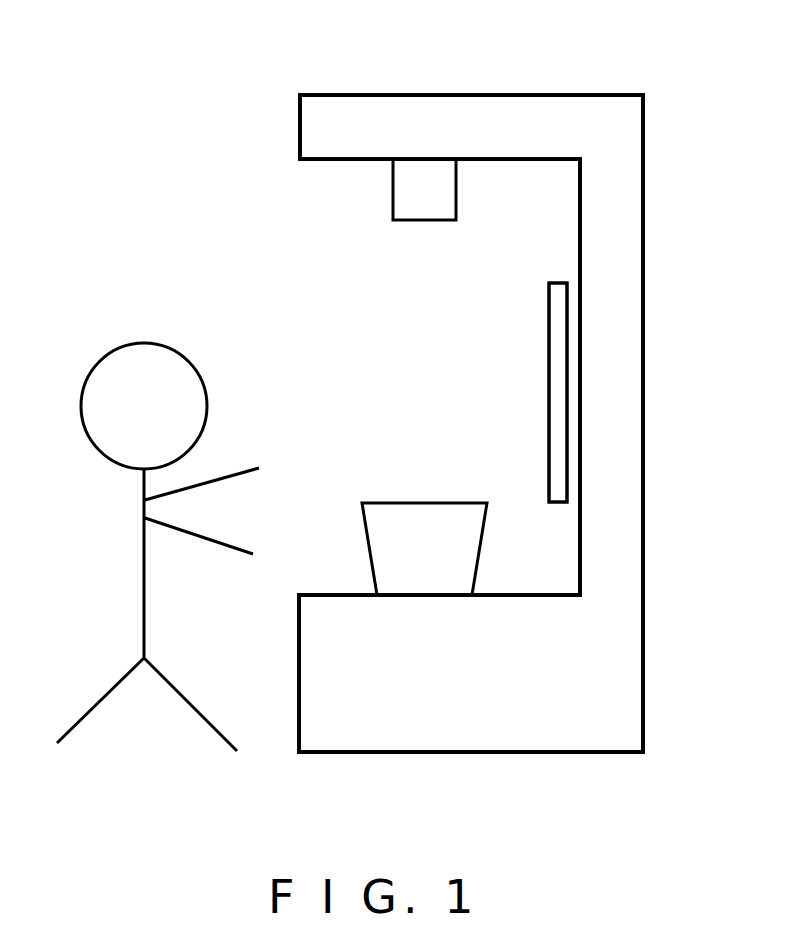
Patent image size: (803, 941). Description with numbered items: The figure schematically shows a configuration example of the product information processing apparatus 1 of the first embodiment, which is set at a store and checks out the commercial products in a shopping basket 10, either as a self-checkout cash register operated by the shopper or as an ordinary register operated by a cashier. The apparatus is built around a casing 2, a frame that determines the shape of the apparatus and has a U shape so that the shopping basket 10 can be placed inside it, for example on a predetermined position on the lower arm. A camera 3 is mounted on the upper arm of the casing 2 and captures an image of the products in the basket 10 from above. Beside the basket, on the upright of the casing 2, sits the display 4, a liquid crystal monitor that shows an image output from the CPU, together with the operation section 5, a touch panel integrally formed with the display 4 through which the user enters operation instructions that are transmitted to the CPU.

The product information processing apparatus 1 is at (494, 376).
The casing 2 is at (645, 243).
The camera 3 is at (432, 222).
The display 4 is at (548, 354).
The operation section 5 is at (558, 392).
The shopping basket 10 is at (462, 502).